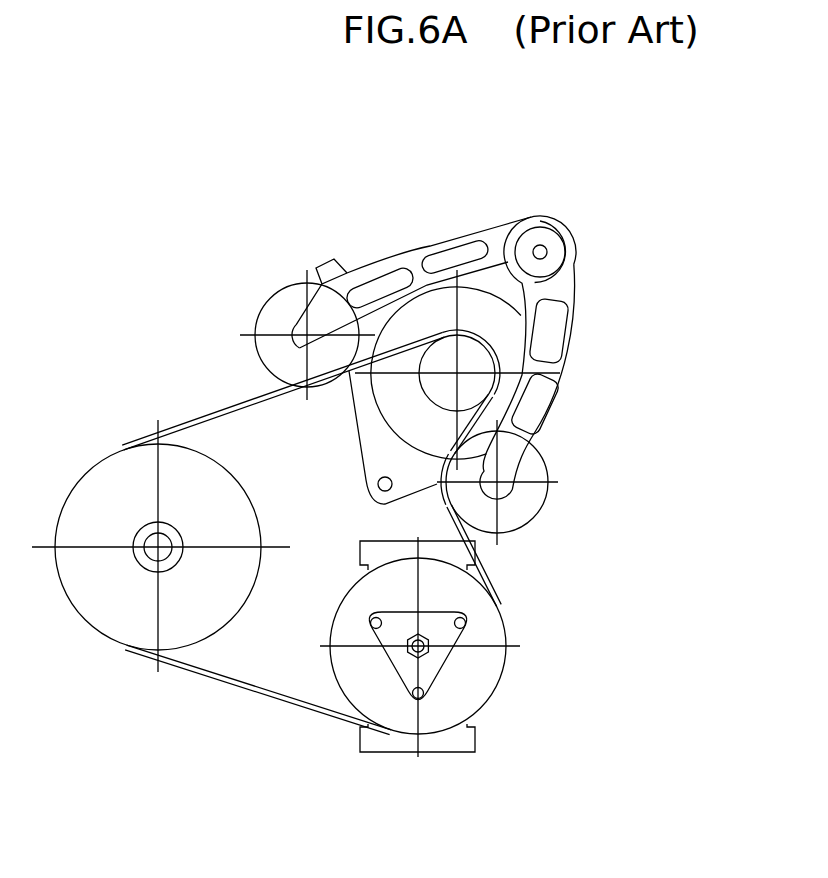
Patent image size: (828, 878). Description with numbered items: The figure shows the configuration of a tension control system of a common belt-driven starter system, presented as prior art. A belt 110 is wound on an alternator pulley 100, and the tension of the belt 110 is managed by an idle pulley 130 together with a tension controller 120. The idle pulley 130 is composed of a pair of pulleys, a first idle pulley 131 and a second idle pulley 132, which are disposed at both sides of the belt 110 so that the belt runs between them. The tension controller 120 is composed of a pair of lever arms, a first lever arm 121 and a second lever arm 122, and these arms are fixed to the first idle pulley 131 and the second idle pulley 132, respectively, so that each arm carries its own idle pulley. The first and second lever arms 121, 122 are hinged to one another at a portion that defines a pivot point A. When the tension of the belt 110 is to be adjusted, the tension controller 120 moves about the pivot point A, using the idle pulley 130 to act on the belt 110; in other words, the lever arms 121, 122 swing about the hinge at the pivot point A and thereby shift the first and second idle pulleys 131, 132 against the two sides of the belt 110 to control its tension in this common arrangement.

The alternator pulley 100 is at (418, 418).
The belt 110 is at (205, 421).
The tension controller 120 is at (495, 160).
The first lever arm 121 is at (560, 337).
The second lever arm 122 is at (450, 270).
The idle pulley 130 is at (300, 173).
The first idle pulley 131 is at (278, 310).
The second idle pulley 132 is at (460, 440).
The pivot point A is at (548, 258).